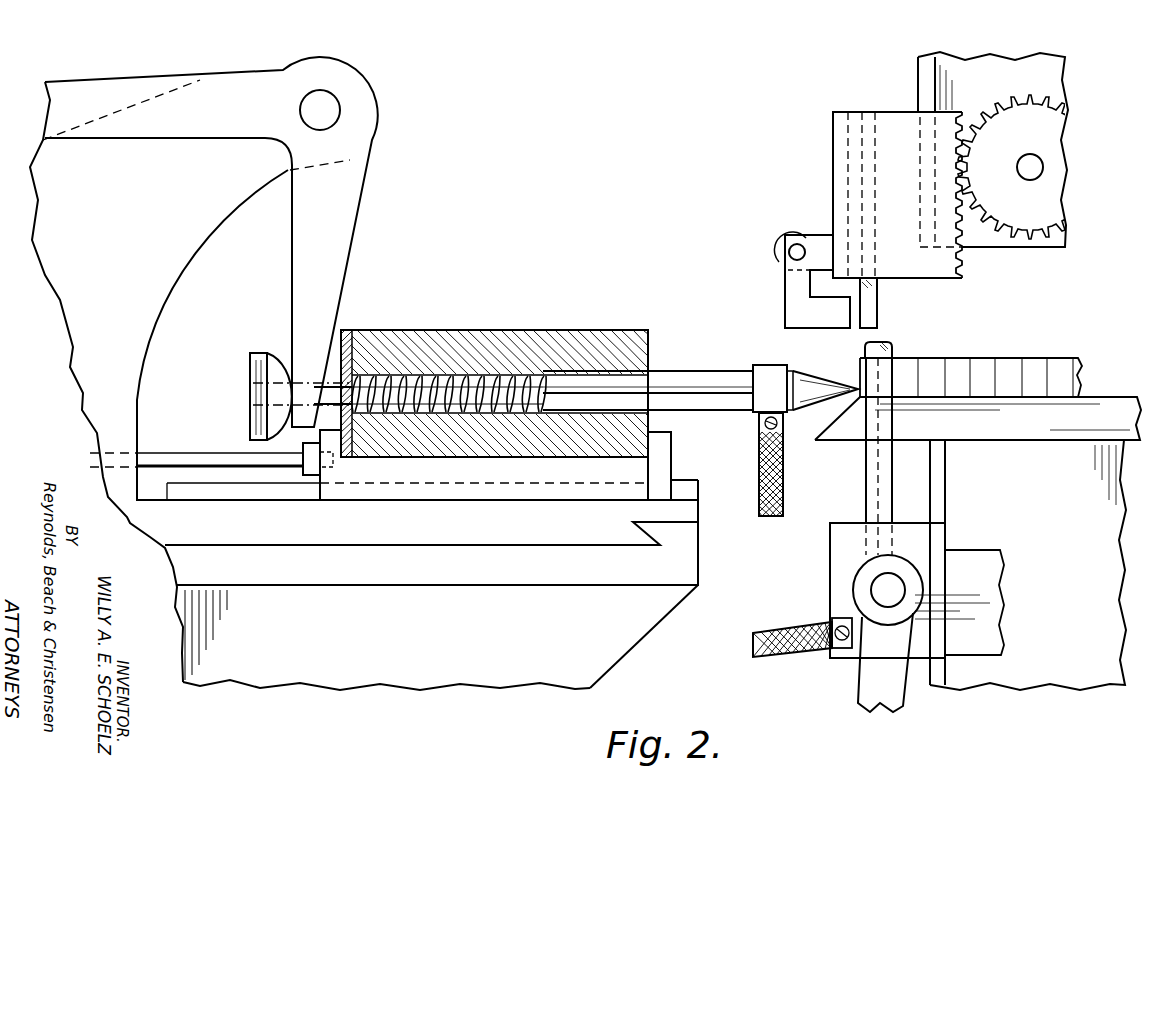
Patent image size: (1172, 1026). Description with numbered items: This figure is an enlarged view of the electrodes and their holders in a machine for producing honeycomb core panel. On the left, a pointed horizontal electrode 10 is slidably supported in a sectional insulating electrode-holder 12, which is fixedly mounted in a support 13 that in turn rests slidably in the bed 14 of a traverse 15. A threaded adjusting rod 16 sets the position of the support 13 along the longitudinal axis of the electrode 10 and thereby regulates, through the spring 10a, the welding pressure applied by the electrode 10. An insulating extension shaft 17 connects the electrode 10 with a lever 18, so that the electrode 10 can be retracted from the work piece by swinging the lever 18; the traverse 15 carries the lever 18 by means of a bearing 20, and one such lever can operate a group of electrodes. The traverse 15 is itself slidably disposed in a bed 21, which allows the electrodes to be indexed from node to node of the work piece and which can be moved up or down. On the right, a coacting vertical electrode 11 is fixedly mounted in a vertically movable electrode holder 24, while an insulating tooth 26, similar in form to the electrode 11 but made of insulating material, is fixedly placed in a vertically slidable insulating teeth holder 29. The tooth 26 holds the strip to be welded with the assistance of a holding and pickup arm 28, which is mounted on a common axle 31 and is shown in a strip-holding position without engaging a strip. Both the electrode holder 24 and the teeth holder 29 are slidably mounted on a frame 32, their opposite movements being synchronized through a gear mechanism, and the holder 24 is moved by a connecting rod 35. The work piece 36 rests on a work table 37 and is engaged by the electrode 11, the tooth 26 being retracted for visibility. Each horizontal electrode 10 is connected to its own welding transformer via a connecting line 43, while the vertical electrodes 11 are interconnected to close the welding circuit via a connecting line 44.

The horizontal electrode 10 is at (692, 375).
The spring 10a is at (400, 385).
The vertical electrode 11 is at (892, 352).
The sectional insulating electrode-holder 12 is at (485, 338).
The support 13 is at (648, 467).
The bed 14 is at (687, 490).
The traverse 15 is at (672, 515).
The threaded adjusting rod 16 is at (195, 458).
The insulating extension shaft 17 is at (327, 390).
The lever 18 is at (330, 224).
The bearing 20 is at (325, 107).
The bed 21 is at (612, 613).
The electrode holder 24 is at (840, 556).
The insulating tooth 26 is at (872, 315).
The holding and pickup arm 28 is at (790, 294).
The insulating teeth holder 29 is at (886, 118).
The common axle 31 is at (795, 245).
The frame 32 is at (1003, 65).
The connecting rod 35 is at (870, 683).
The work piece 36 is at (1005, 366).
The work table 37 is at (1100, 405).
The connecting line 43 is at (782, 490).
The connecting line 44 is at (778, 631).